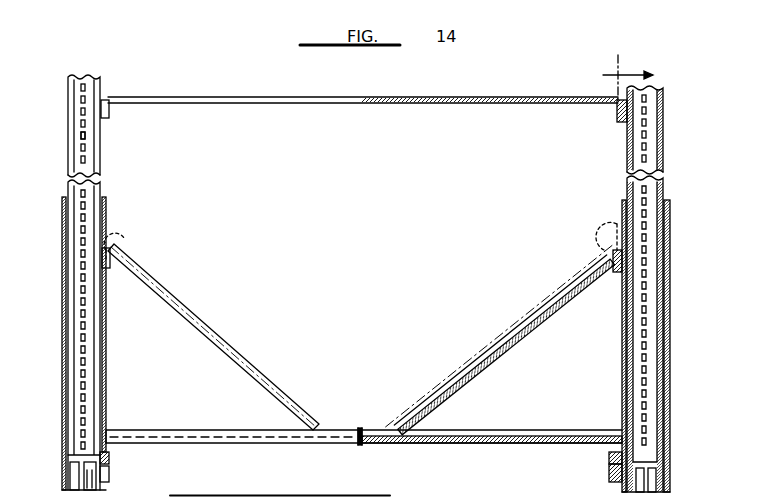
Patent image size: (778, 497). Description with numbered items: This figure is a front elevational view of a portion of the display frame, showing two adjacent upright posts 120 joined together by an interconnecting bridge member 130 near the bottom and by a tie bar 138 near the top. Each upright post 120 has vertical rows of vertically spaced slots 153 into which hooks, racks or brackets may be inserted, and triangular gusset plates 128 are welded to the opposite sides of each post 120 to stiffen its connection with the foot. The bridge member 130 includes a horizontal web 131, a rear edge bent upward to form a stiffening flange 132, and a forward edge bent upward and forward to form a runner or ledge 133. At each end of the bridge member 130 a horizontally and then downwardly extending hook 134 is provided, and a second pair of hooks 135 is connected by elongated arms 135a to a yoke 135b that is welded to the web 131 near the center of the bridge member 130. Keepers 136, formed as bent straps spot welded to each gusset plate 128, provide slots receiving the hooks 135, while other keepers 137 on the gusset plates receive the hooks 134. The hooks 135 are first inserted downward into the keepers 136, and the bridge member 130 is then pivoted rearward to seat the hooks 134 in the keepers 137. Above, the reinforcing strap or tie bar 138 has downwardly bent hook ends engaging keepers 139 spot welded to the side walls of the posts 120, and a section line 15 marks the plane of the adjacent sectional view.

The section line 15 is at (624, 77).
The upright post 120 is at (70, 157).
The gusset plate 128 is at (62, 300).
The interconnecting bridge member 130 is at (418, 449).
The horizontal web 131 is at (256, 438).
The stiffening flange 132 is at (498, 430).
The runner or ledge 133 is at (178, 429).
The hook 134 is at (101, 463).
The hook 135 is at (128, 240).
The elongated arm 135a is at (213, 343).
The yoke 135b is at (378, 432).
The keeper 136 is at (108, 266).
The keeper 137 is at (106, 476).
The reinforcing strap or tie bar 138 is at (500, 104).
The keeper 139 is at (110, 110).
The slot 153 is at (84, 139).